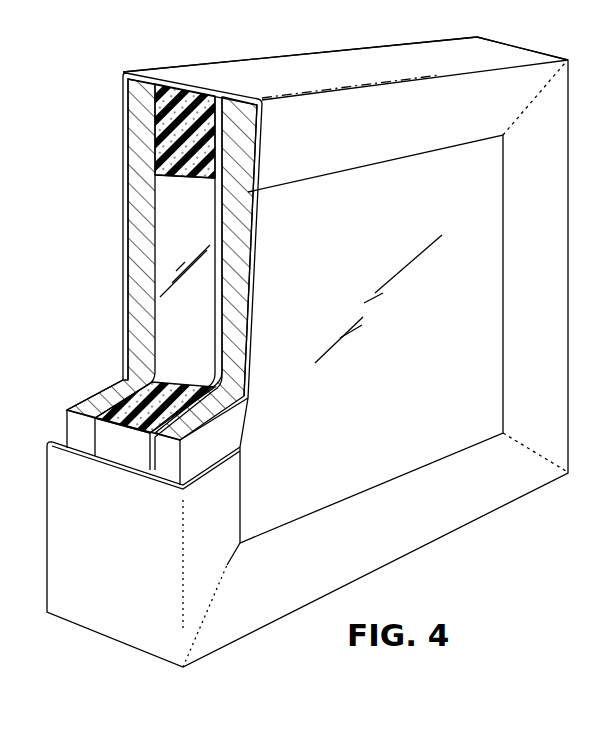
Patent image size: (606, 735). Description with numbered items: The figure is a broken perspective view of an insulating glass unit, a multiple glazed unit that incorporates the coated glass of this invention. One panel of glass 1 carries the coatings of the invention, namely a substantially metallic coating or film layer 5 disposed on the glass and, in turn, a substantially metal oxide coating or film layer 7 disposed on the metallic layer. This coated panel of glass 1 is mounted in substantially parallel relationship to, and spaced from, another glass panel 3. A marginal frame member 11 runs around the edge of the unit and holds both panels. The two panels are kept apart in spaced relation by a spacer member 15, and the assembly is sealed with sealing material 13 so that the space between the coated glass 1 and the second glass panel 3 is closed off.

The glass panel 1 is at (393, 369).
The glass panel 3 is at (128, 289).
The metal layer 5 is at (232, 334).
The metal oxide layer 7 is at (221, 328).
The marginal frame member 11 is at (263, 63).
The sealing material 13 is at (158, 126).
The spacer member 15 is at (196, 180).